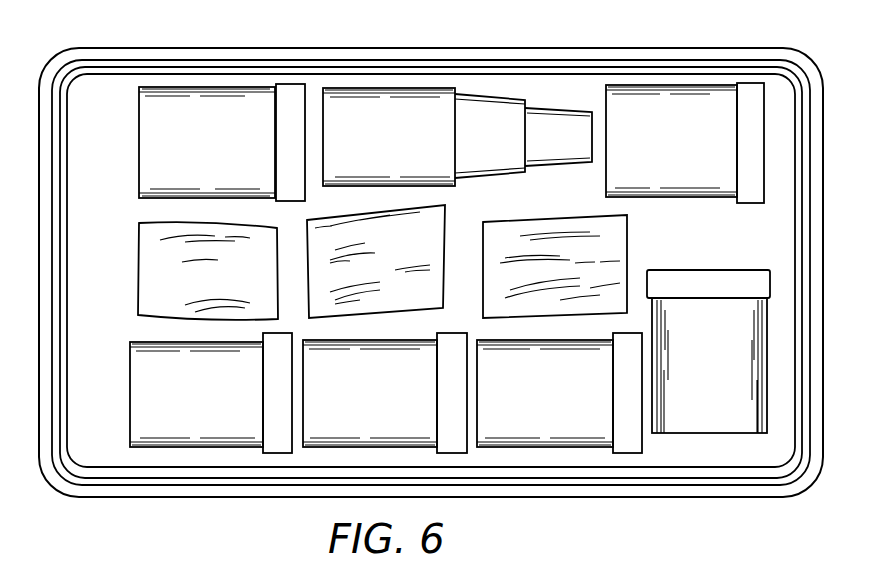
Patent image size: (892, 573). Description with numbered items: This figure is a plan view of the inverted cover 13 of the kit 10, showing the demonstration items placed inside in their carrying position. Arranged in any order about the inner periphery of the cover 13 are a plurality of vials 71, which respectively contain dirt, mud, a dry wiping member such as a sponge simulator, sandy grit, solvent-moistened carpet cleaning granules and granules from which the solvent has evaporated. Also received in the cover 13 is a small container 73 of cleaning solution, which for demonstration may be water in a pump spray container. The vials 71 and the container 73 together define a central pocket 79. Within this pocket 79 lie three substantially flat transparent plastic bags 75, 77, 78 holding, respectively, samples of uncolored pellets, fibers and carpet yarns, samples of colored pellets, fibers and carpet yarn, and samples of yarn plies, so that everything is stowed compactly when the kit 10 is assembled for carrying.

The kit 10 is at (643, 512).
The cover 13 is at (545, 47).
The vials 71 is at (146, 180).
The container 73 is at (562, 110).
The transparent plastic bag 75 is at (322, 213).
The transparent plastic bag 77 is at (613, 245).
The transparent plastic bag 78 is at (145, 252).
The central pocket 79 is at (424, 146).